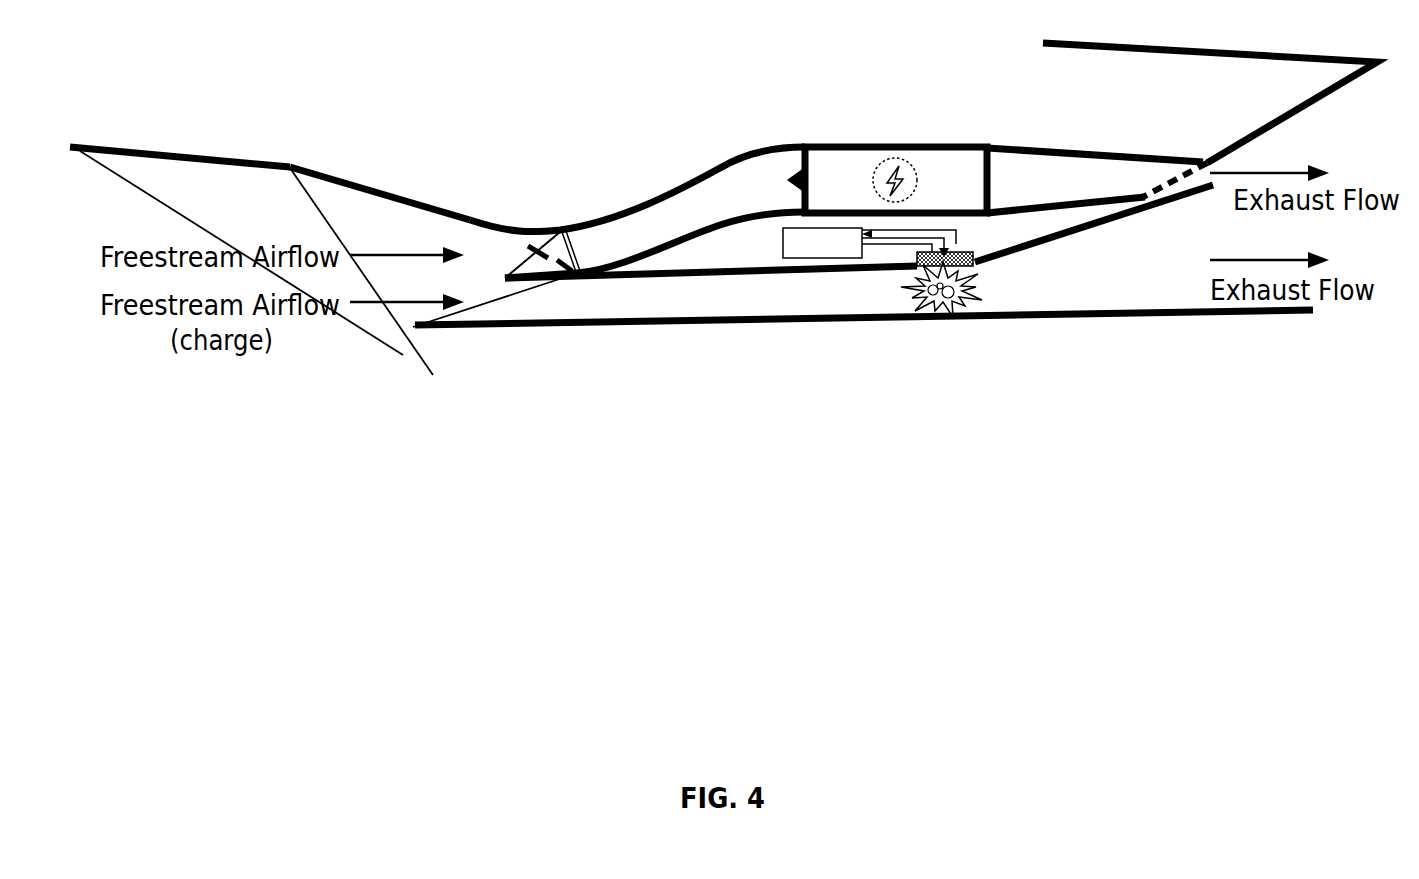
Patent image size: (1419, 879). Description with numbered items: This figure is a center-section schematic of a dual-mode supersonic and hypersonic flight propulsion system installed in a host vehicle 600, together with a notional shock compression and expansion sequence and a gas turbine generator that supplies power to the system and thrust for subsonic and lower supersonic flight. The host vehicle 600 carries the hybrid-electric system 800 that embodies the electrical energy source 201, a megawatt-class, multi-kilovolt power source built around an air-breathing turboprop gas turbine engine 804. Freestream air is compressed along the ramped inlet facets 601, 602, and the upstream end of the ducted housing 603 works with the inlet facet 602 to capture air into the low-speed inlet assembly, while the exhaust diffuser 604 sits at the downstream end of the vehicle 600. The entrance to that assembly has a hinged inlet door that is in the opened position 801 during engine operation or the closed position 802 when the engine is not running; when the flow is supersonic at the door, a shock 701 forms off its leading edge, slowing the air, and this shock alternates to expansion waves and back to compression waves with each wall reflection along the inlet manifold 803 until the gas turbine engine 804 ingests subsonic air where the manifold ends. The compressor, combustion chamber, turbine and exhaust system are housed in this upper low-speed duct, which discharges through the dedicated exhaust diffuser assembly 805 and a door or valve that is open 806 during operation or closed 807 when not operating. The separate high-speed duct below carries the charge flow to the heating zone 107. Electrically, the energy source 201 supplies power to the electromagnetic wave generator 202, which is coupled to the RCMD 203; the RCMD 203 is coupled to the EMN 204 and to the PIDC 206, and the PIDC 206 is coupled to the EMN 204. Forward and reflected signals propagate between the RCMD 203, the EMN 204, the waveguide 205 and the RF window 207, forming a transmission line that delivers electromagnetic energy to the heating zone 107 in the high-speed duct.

The heating zone 107 is at (940, 310).
The electrical energy source (EES) 201 is at (909, 135).
The electromagnetic wave generator (EWG) 202 is at (820, 243).
The RCMD 203 is at (736, 355).
The EMN 204 is at (798, 355).
The waveguide 205 is at (940, 227).
The PIDC 206 is at (855, 355).
The RF window 207 is at (973, 262).
The host vehicle 600 is at (392, 62).
The ramped inlet facet 601 is at (193, 157).
The ramped inlet facet 602 is at (422, 210).
The ducted housing 603 is at (498, 332).
The exhaust diffuser 604 is at (1290, 114).
The shock 701 is at (545, 242).
The hybrid-electric system (HES) 800 is at (735, 128).
The inlet door (opened position) 801 is at (505, 278).
The inlet door (closed position) 802 is at (518, 242).
The inlet manifold 803 is at (657, 227).
The gas turbine engine (GTE) 804 is at (897, 142).
The exhaust diffuser assembly 805 is at (1053, 172).
The exhaust door (open position) 806 is at (1173, 193).
The exhaust door (closed position) 807 is at (1178, 170).